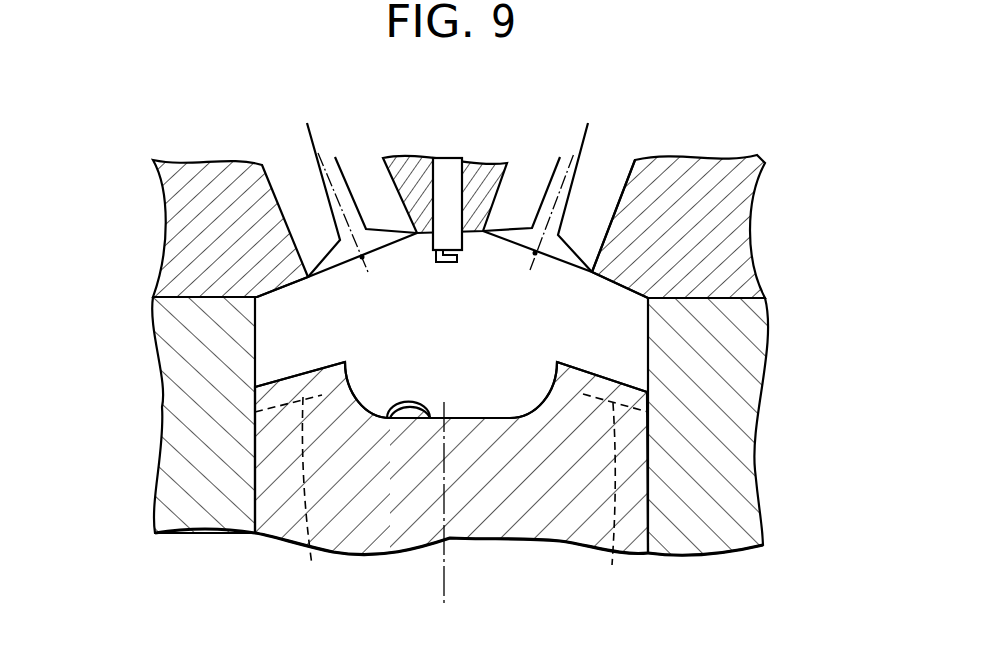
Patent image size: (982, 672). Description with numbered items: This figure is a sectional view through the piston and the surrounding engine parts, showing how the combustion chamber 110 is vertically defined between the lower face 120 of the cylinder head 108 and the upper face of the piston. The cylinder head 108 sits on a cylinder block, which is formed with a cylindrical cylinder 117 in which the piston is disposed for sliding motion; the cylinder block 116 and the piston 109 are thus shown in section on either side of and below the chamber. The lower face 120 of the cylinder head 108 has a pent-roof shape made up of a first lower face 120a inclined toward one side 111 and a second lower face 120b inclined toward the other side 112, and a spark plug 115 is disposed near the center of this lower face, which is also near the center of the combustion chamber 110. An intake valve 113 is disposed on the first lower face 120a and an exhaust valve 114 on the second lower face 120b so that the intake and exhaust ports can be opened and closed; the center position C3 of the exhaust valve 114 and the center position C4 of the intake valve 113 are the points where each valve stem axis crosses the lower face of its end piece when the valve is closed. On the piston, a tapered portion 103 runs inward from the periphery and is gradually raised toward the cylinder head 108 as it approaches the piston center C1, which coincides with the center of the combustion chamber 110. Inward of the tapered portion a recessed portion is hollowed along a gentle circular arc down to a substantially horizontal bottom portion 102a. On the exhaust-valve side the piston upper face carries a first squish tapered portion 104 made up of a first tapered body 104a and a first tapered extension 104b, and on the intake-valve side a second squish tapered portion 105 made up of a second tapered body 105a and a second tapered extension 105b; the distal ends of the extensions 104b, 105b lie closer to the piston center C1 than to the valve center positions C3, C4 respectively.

The bottom portion 102a is at (386, 420).
The tapered portion 103 is at (460, 497).
The first squish tapered portion 104 is at (72, 328).
The first tapered body 104a is at (285, 396).
The first tapered extension 104b is at (290, 377).
The second squish tapered portion 105 is at (855, 300).
The second tapered body 105a is at (605, 398).
The second tapered extension 105b is at (585, 371).
The cylinder head 108 is at (725, 236).
The piston 109 is at (515, 517).
The combustion chamber 110 is at (519, 395).
The one side 111 is at (617, 198).
The other side 112 is at (309, 195).
The intake valve 113 is at (555, 184).
The exhaust valve 114 is at (340, 187).
The spark plug 115 is at (450, 180).
The cylinder block 116 is at (737, 432).
The cylinder 117 is at (258, 337).
The lower face 120 is at (550, 323).
The first lower face 120a is at (611, 268).
The second lower face 120b is at (285, 268).
The piston center C1 is at (437, 518).
The center position of the exhaust valve C3 is at (370, 228).
The center position of the intake valve C4 is at (533, 228).